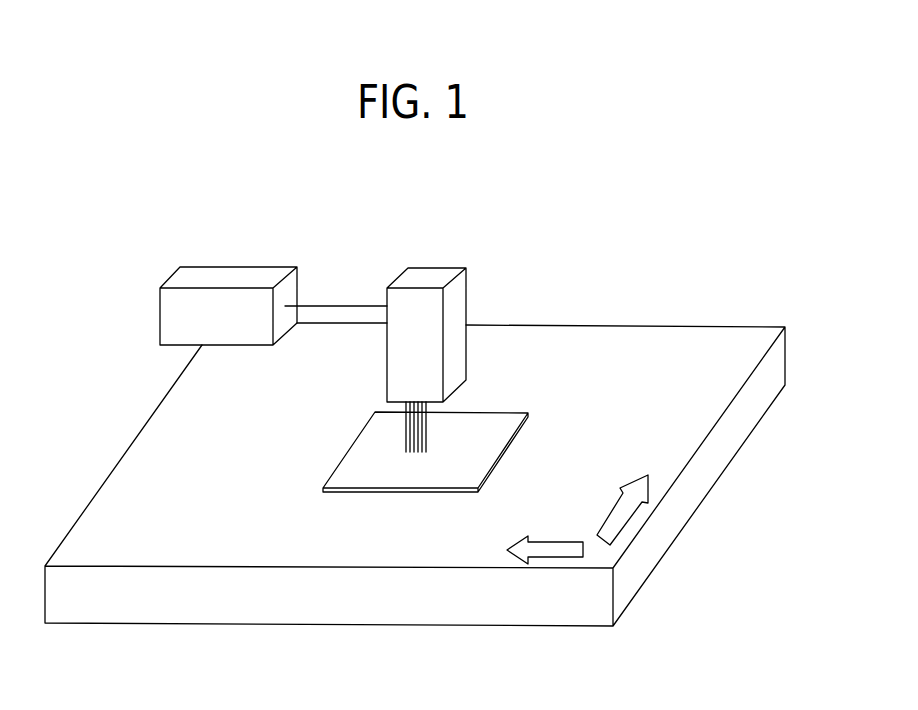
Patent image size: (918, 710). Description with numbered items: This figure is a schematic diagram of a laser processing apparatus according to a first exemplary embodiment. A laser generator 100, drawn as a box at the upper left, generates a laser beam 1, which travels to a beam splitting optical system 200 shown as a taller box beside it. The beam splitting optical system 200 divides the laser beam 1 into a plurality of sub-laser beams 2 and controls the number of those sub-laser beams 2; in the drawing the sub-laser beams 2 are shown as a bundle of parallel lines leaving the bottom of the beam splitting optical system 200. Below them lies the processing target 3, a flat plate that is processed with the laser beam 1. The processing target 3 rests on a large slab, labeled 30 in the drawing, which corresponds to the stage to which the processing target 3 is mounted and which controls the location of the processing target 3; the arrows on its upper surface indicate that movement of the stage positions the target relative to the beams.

The laser beam 1 is at (340, 304).
The sub-laser beams 2 is at (428, 426).
The processing target 3 is at (375, 468).
The base / stage 30 is at (677, 338).
The laser generator 100 is at (235, 273).
The beam splitting optical system 200 is at (434, 276).